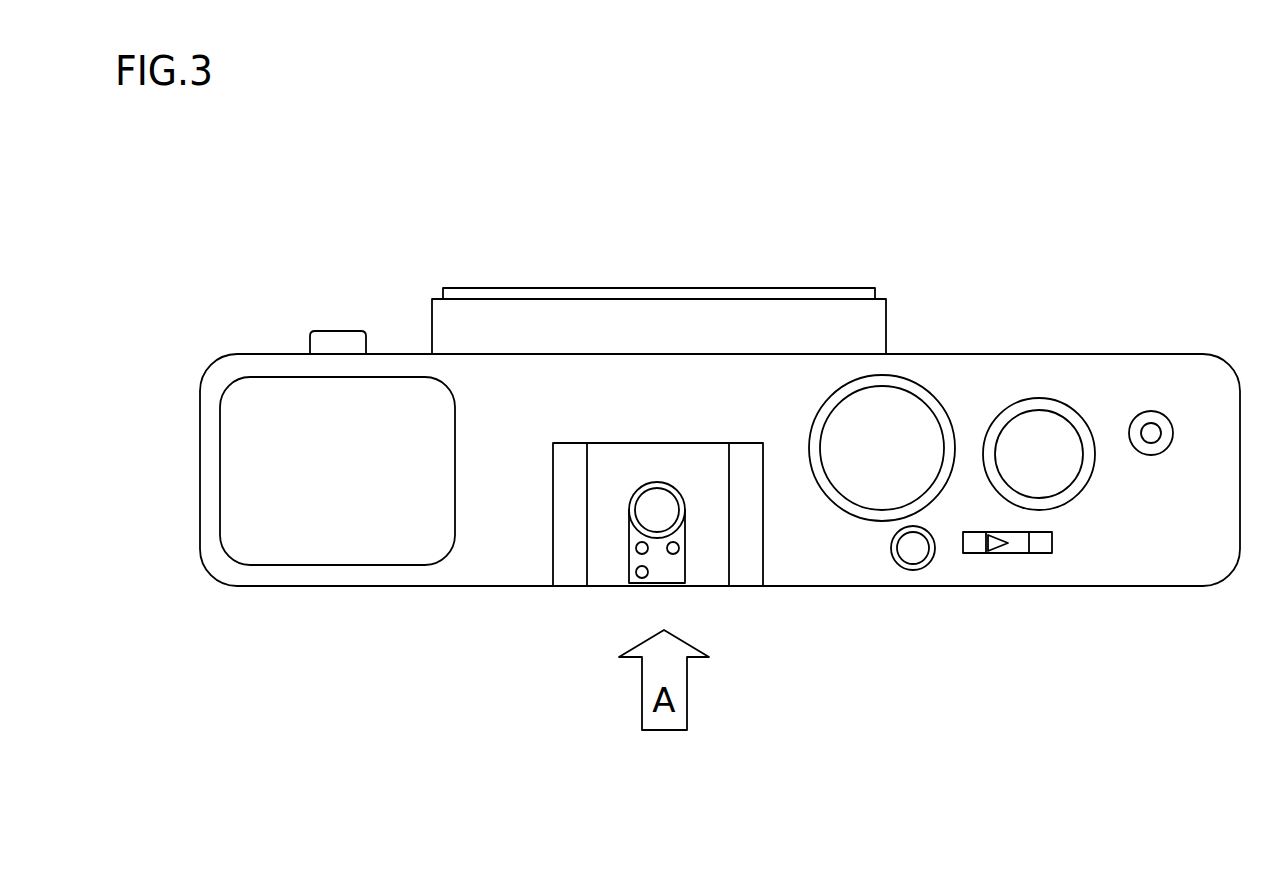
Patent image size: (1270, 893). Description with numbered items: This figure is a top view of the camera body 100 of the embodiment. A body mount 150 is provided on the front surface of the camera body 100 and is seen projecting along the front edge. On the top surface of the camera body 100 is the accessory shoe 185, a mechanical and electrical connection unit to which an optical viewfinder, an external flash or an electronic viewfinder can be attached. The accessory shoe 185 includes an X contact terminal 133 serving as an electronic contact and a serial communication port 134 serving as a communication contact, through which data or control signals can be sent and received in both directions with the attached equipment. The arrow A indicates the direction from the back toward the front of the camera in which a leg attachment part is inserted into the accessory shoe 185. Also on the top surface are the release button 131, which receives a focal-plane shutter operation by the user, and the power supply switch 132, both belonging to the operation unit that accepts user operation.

The camera body 100 is at (1019, 188).
The body mount 150 is at (652, 288).
The accessory shoe 185 is at (573, 608).
The X contact terminal 133 is at (655, 483).
The serial communication port 134 is at (642, 554).
The release button 131 is at (1035, 432).
The power supply switch 132 is at (1015, 553).